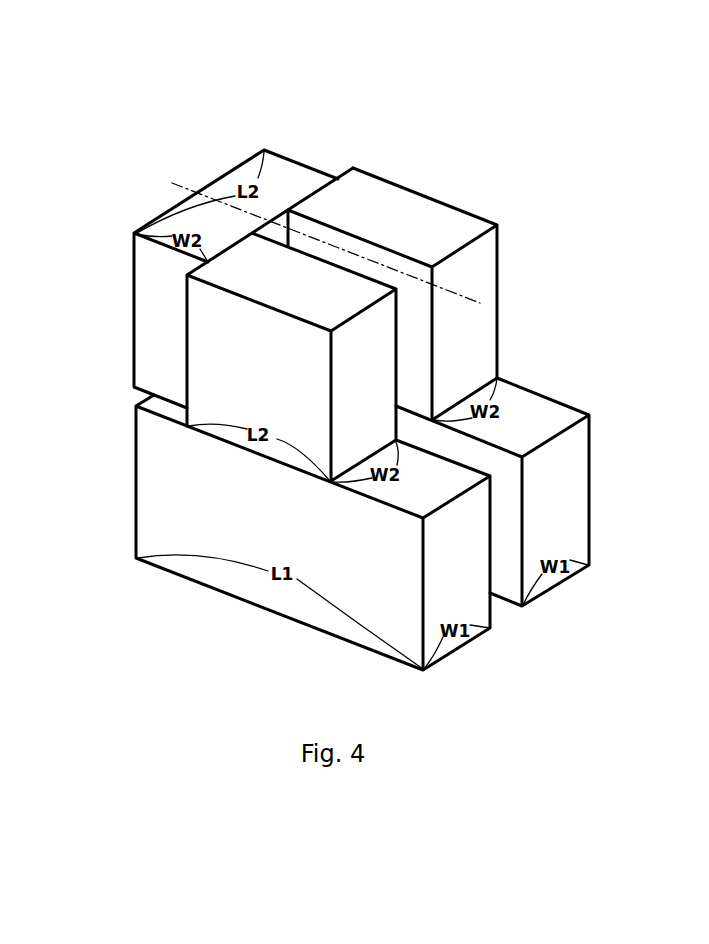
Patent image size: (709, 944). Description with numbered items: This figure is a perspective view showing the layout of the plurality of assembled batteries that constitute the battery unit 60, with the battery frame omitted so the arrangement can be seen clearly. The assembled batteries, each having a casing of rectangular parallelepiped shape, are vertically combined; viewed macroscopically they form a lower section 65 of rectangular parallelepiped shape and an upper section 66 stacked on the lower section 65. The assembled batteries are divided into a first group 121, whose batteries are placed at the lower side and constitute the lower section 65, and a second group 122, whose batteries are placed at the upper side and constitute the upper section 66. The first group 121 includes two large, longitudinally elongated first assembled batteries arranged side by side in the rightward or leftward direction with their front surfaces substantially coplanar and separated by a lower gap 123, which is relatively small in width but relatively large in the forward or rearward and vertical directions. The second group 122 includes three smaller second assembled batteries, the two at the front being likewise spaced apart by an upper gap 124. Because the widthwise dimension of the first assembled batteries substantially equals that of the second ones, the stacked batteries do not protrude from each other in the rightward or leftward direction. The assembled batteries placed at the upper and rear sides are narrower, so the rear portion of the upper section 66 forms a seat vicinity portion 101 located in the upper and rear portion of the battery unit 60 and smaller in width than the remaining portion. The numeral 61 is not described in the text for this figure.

The battery unit 60 is at (366, 411).
The magnet piece 61 is at (366, 410).
The lower section 65 is at (370, 524).
The upper section 66 is at (352, 315).
The seat vicinity portion 101 is at (297, 137).
The first group 121 is at (534, 275).
The second group 122 is at (606, 588).
The lower gap 123 is at (500, 578).
The upper gap 124 is at (423, 347).